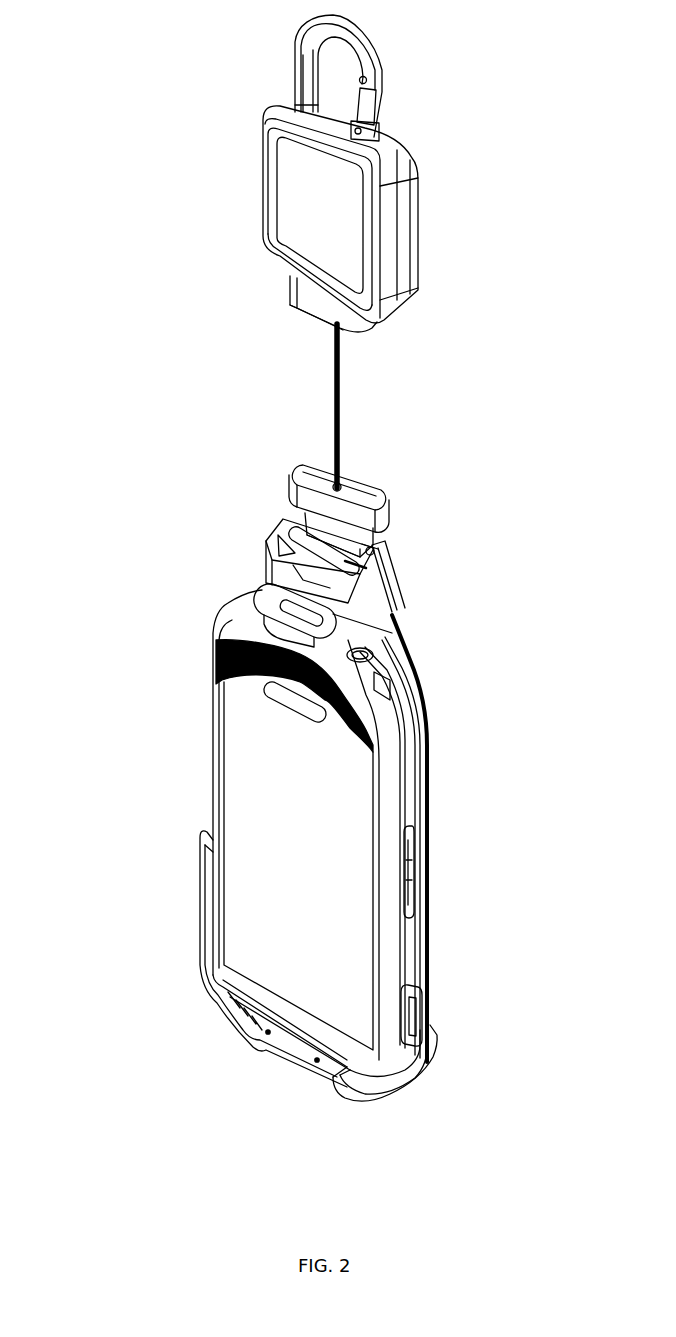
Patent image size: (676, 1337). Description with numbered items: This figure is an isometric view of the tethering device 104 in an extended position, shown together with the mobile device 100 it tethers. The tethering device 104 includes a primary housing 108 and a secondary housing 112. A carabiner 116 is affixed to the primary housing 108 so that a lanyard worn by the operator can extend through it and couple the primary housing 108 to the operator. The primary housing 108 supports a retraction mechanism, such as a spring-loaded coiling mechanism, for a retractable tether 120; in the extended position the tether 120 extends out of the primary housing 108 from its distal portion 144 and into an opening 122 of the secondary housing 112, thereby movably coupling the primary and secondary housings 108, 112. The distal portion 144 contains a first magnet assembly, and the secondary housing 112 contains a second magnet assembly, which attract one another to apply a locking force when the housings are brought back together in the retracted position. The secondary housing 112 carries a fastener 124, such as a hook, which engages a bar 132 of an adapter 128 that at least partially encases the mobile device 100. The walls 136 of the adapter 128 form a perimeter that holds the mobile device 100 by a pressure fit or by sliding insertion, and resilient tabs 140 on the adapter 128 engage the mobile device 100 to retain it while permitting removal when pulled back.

The mobile device 100 is at (310, 860).
The tethering device 104 is at (274, 214).
The primary housing 108 is at (275, 263).
The secondary housing 112 is at (310, 502).
The carabiner 116 is at (294, 50).
The retractable tether 120 is at (333, 390).
The opening 122 is at (340, 487).
The fastener 124 is at (380, 548).
The adapter 128 is at (418, 1086).
The bar 132 is at (358, 566).
The walls 136 is at (205, 990).
The resilient tabs 140 is at (268, 613).
The distal portion 144 is at (377, 323).